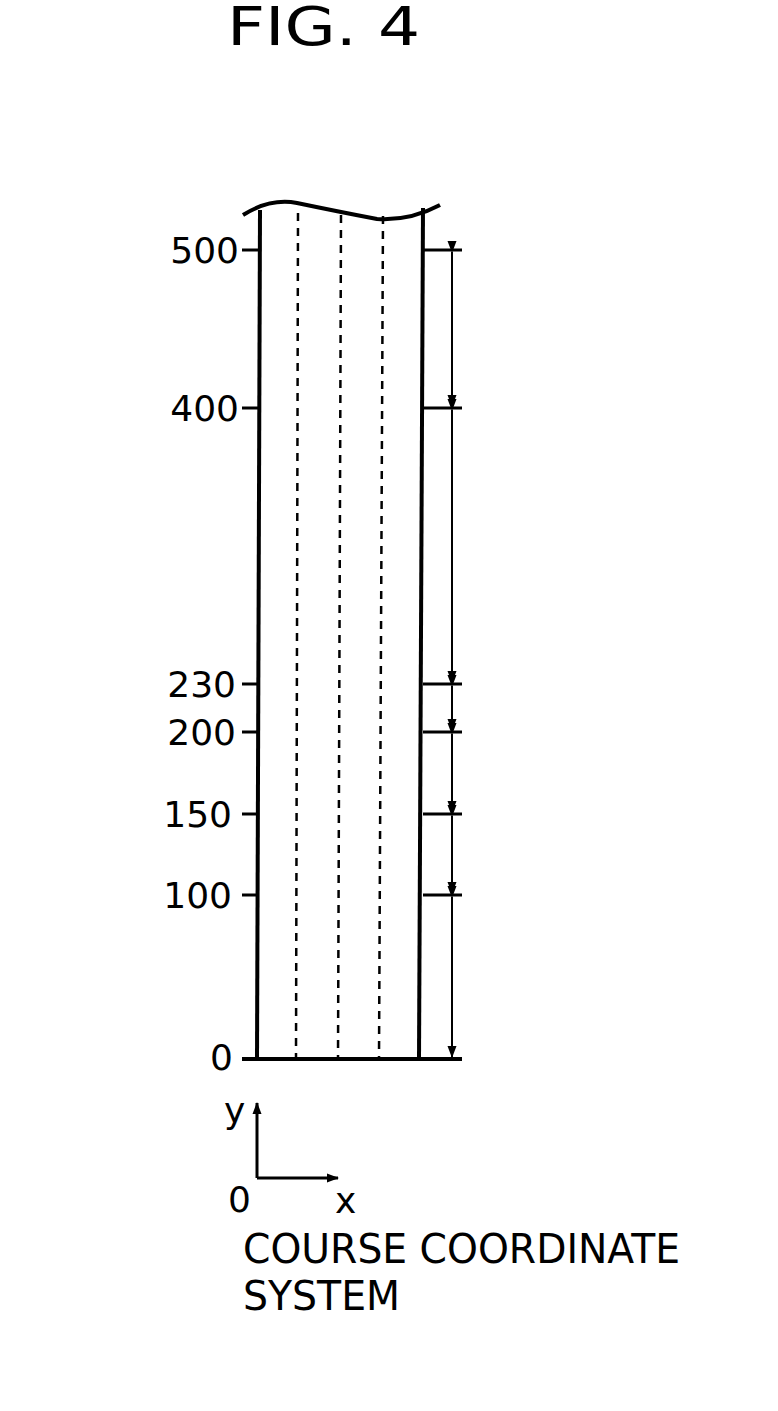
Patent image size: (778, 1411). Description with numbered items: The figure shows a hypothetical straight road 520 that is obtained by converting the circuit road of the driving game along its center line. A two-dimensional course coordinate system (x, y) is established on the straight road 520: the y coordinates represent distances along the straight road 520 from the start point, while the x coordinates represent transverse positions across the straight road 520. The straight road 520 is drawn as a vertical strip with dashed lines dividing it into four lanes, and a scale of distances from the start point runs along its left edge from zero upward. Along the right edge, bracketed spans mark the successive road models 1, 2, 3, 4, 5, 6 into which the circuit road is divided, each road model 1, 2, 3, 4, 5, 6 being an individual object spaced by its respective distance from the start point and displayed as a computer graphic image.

The hypothetical straight road 520 is at (243, 541).
The road model 1 is at (478, 977).
The road model 2 is at (478, 854).
The road model 3 is at (478, 773).
The road model 4 is at (478, 708).
The road model 5 is at (478, 546).
The road model 6 is at (479, 329).